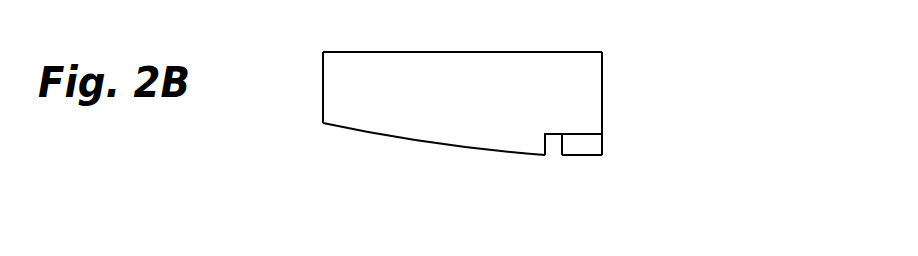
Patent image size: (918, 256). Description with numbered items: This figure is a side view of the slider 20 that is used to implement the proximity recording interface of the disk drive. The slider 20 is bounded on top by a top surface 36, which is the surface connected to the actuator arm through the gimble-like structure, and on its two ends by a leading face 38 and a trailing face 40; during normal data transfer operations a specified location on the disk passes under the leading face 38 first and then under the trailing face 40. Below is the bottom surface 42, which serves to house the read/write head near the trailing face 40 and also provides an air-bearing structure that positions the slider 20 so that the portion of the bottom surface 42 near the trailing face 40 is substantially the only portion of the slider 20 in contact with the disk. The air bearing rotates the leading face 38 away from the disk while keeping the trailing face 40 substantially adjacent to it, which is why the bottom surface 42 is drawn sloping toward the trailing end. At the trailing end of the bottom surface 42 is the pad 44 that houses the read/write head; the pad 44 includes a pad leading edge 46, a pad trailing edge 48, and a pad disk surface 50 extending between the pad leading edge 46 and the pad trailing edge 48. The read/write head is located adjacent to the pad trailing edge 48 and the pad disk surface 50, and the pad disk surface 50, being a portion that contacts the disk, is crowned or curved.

The slider 20 is at (667, 72).
The top surface 36 is at (462, 52).
The leading face 38 is at (323, 83).
The trailing face 40 is at (602, 100).
The bottom surface 42 is at (442, 181).
The pad 44 is at (628, 183).
The pad leading edge 46 is at (557, 152).
The pad trailing edge 48 is at (602, 154).
The pad disk surface 50 is at (580, 155).